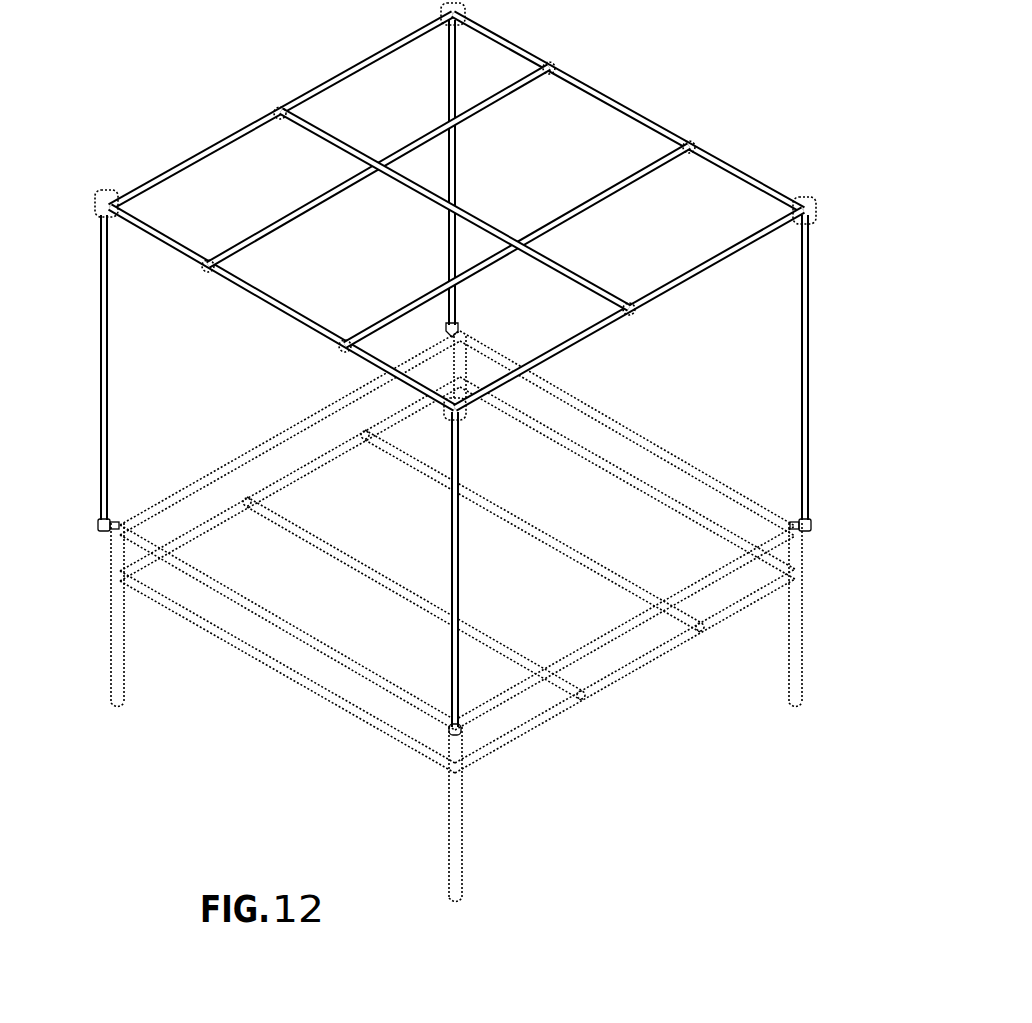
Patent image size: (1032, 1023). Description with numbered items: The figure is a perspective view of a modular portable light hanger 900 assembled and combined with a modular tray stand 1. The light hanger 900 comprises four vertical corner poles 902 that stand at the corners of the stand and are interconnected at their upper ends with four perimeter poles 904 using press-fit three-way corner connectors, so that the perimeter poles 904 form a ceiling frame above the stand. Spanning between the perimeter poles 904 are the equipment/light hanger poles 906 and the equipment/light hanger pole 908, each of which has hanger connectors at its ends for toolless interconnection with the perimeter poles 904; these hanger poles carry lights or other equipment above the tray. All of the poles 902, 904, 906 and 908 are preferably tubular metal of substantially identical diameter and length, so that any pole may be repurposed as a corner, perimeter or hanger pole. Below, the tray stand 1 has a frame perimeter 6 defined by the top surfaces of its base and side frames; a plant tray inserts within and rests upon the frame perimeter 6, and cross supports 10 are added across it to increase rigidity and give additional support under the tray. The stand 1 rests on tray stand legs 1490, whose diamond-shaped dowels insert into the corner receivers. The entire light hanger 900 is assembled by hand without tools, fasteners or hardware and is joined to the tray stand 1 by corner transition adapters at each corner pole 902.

The modular portable light hanger 900 is at (455, 369).
The corner pole 902 is at (454, 377).
The perimeter pole 904 is at (456, 211).
The equipment/light hanger pole 906 is at (448, 207).
The equipment/light hanger pole 908 is at (454, 211).
The tray stand 1 is at (456, 616).
The frame perimeter 6 is at (457, 552).
The cross support 10 is at (473, 565).
The tray stand leg 1490 is at (456, 619).